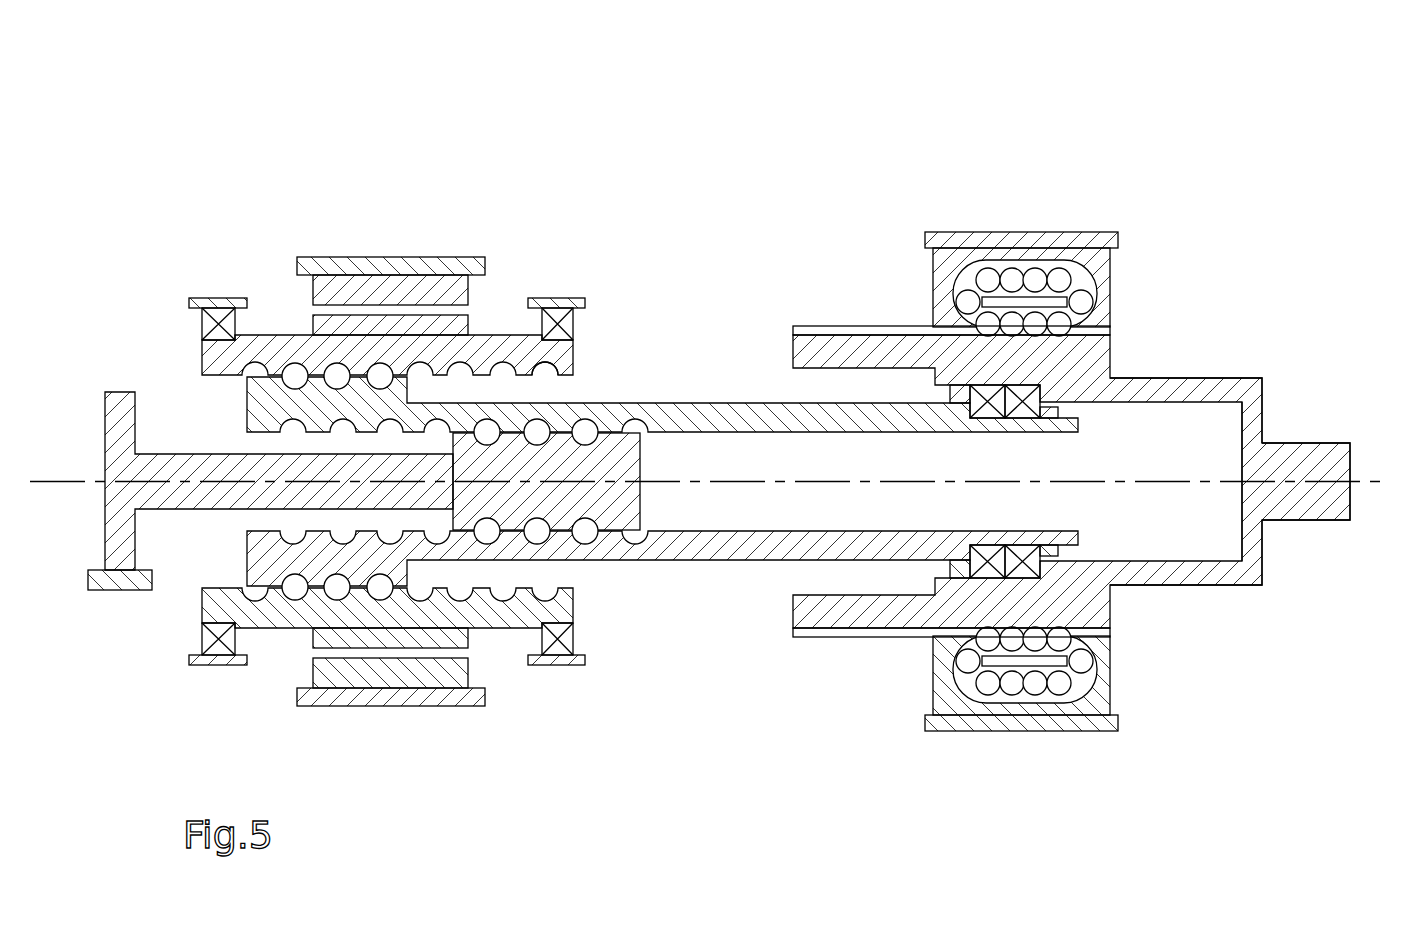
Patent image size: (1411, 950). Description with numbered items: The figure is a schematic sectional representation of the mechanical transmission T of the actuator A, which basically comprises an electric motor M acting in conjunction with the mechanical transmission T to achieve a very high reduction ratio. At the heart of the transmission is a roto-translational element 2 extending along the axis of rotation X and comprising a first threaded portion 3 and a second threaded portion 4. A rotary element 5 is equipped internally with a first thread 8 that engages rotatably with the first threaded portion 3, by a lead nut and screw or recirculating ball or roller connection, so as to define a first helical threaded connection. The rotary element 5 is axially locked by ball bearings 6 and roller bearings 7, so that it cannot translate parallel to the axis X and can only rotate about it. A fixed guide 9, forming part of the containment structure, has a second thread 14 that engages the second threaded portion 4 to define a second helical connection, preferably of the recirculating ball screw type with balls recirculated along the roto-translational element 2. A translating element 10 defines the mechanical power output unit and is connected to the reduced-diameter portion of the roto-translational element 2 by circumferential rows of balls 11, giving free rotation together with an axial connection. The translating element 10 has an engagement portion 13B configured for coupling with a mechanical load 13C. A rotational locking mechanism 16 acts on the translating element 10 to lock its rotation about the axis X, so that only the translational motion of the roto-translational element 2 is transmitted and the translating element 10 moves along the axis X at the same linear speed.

The roto-translational element 2 is at (732, 575).
The first threaded portion 3 is at (292, 382).
The second threaded portion 4 is at (287, 441).
The rotary element 5 is at (501, 326).
The ball bearings 6 is at (217, 318).
The roller bearings 7 is at (562, 302).
The first thread 8 is at (558, 374).
The fixed guide 9 is at (652, 460).
The translating element 10 is at (1206, 366).
The circumferential rows of balls 11 is at (986, 566).
The engagement portion 13B is at (1253, 380).
The mechanical load 13C is at (1098, 362).
The second thread 14 is at (594, 534).
The rotational locking mechanism 16 is at (925, 262).
The actuator A is at (214, 182).
The electric motor M is at (387, 226).
The mechanical transmission T is at (681, 333).
The axis of rotation X is at (1383, 481).